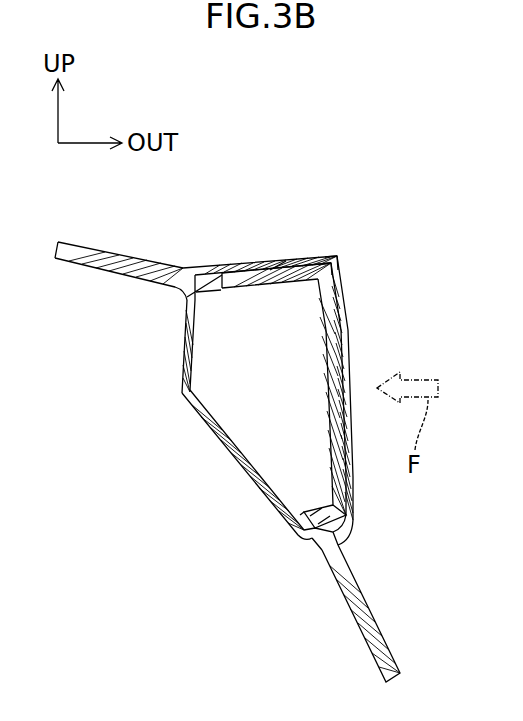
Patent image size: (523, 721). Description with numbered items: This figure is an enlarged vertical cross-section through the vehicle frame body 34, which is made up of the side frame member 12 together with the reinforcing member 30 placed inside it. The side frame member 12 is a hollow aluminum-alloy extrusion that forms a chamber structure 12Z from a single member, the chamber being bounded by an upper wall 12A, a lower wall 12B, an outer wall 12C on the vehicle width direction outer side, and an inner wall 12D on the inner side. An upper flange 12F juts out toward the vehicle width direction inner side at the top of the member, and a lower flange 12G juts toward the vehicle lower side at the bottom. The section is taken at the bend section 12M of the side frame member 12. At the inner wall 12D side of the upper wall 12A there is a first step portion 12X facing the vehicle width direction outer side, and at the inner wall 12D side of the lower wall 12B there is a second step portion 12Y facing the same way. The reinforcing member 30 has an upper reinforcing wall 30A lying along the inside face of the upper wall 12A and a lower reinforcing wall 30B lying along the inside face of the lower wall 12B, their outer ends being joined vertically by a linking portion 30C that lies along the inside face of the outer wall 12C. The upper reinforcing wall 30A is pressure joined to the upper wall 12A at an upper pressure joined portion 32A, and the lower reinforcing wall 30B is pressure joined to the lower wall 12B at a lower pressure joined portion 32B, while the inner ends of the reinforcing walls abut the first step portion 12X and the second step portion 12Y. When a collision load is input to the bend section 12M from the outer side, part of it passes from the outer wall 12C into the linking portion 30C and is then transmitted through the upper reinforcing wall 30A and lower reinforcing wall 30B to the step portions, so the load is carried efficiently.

The side frame member 12 is at (320, 221).
The upper wall 12A is at (248, 264).
The lower wall 12B is at (352, 532).
The outer wall 12C is at (352, 345).
The inner wall 12D is at (181, 383).
The upper flange 12F is at (138, 257).
The lower flange 12G is at (368, 607).
The bend section 12M is at (338, 235).
The first step portion 12X is at (222, 296).
The second step portion 12Y is at (308, 507).
The chamber structure 12Z is at (212, 452).
The reinforcing member 30 is at (344, 307).
The upper reinforcing wall 30A is at (272, 285).
The lower reinforcing wall 30B is at (322, 505).
The linking portion 30C is at (328, 403).
The upper pressure joined portion 32A is at (278, 261).
The lower pressure joined portion 32B is at (336, 540).
The vehicle frame body 34 is at (401, 221).